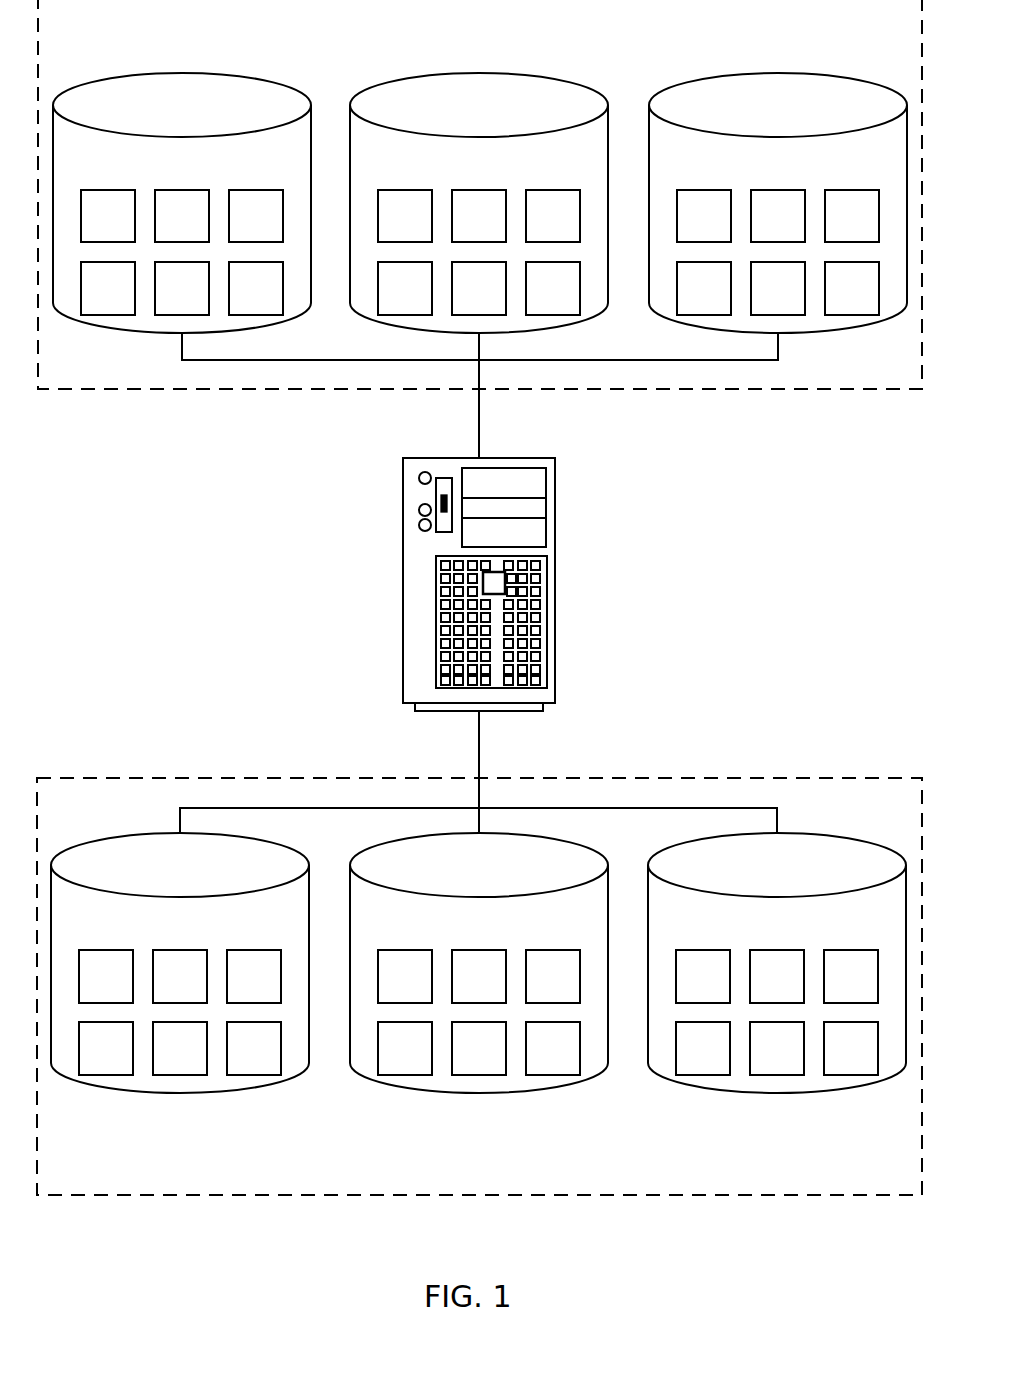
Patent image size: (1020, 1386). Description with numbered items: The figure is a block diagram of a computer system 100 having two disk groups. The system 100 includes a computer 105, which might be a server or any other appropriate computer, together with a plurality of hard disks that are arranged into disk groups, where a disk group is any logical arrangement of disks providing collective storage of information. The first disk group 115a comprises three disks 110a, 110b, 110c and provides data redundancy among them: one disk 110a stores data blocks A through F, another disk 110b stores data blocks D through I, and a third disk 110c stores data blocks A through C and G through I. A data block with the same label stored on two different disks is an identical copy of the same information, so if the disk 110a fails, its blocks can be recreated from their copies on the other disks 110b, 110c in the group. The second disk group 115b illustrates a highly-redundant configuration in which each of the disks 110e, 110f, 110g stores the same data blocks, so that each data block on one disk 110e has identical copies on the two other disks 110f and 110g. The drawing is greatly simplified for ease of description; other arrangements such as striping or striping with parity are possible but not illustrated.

The system 100 is at (727, 1220).
The computer 105 is at (555, 585).
The disk 110a is at (182, 72).
The disk 110b is at (479, 72).
The disk 110c is at (778, 72).
The disk 110e is at (180, 1093).
The disk 110f is at (479, 1093).
The disk 110g is at (777, 1093).
The disk group 115a is at (172, 389).
The disk group 115b is at (170, 778).